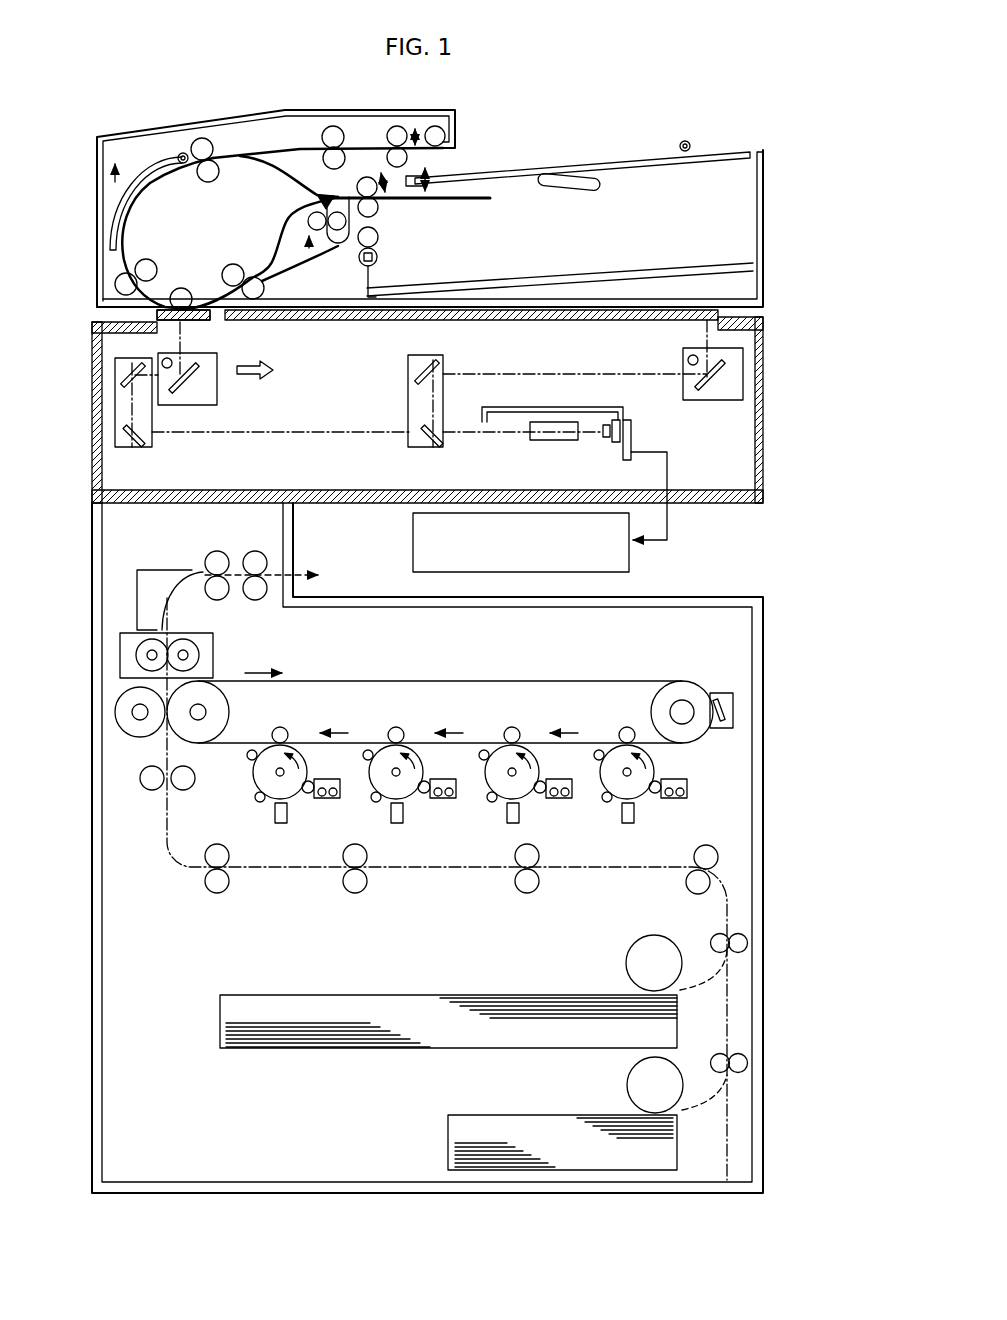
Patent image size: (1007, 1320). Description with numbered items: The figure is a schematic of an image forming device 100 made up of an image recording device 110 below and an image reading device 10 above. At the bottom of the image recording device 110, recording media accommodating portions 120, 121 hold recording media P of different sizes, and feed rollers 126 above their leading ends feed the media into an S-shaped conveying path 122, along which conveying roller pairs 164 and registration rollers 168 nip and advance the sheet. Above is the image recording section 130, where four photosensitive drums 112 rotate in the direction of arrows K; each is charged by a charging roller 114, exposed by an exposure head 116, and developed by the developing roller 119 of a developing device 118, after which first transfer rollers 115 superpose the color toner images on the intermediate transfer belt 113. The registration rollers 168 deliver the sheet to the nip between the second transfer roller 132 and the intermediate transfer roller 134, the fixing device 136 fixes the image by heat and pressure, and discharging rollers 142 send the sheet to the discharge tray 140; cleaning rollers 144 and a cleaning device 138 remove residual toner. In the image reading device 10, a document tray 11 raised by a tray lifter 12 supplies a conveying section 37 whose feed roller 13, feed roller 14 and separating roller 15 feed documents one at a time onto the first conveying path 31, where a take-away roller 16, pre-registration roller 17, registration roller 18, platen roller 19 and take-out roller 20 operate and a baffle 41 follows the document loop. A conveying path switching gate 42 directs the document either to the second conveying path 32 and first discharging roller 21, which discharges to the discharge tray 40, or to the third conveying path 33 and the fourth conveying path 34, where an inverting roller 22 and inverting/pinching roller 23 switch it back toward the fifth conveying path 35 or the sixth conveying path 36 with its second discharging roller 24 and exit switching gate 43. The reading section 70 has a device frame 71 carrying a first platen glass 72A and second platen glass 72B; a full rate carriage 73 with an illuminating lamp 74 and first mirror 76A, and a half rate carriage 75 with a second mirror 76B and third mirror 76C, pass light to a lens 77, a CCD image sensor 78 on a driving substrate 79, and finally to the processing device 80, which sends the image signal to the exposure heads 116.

The image forming device 100 is at (70, 105).
The image reading device 10 is at (88, 141).
The document tray 11 is at (522, 156).
The tray lifter 12 is at (563, 188).
The feed roller 13 is at (456, 130).
The feed roller 14 is at (397, 126).
The separating roller 15 is at (408, 160).
The take-away roller 16 is at (322, 130).
The pre-registration roller 17 is at (194, 178).
The registration roller 18 is at (158, 262).
The platen roller 19 is at (182, 288).
The take-out roller 20 is at (233, 258).
The first discharging roller 21 is at (380, 242).
The inverting roller 22 is at (379, 206).
The inverting/pinching roller 23 is at (367, 177).
The second discharging roller 24 is at (309, 249).
The first conveying path 31 is at (266, 152).
The second conveying path 32 is at (374, 272).
The third conveying path 33 is at (287, 213).
The fourth conveying path 34 is at (470, 199).
The fifth conveying path 35 is at (310, 165).
The sixth conveying path 36 is at (340, 263).
The conveying section 37 is at (370, 128).
The discharge tray 40 is at (600, 268).
The baffle 41 is at (152, 168).
The conveying path switching gate 42 is at (273, 265).
The exit switching gate 43 is at (324, 184).
The reading section 70 is at (767, 443).
The device frame 71 is at (706, 503).
The first platen glass 72A is at (545, 320).
The second platen glass 72B is at (193, 322).
The full rate carriage 73 is at (217, 398).
The illuminating lamp 74 is at (173, 309).
The half rate carriage 75 is at (152, 410).
The first mirror 76A is at (272, 357).
The second mirror 76B is at (130, 363).
The third mirror 76C is at (128, 447).
The lens for focusing 77 is at (545, 441).
The CCD image sensor 78 is at (607, 438).
The driving substrate 79 is at (632, 437).
The processing device 80 is at (413, 533).
The image recording device 110 is at (88, 506).
The photosensitive drum 112 is at (272, 754).
The intermediate transfer belt 113 is at (485, 681).
The charging roller 114 is at (257, 801).
The first transfer roller 115 is at (286, 732).
The exposure head 116 is at (268, 805).
The developing device 118 is at (319, 798).
The developing roller 119 is at (281, 823).
The recording media accommodating portion 120 is at (448, 1145).
The recording media accommodating portion 121 is at (220, 1025).
The conveying path 122 is at (598, 860).
The feed roller 126 is at (626, 963).
The image recording section 130 is at (740, 715).
The second transfer roller 132 is at (145, 738).
The intermediate transfer roller 134 is at (226, 706).
The fixing device 136 is at (213, 652).
The cleaning device 138 is at (720, 693).
The discharge tray 140 is at (370, 597).
The discharging roller 142 is at (253, 598).
The cleaning roller 144 is at (250, 759).
The conveying roller pair 164 is at (224, 883).
The registration rollers 168 is at (180, 791).
The arrow direction K is at (308, 761).
The recording medium P is at (487, 995).